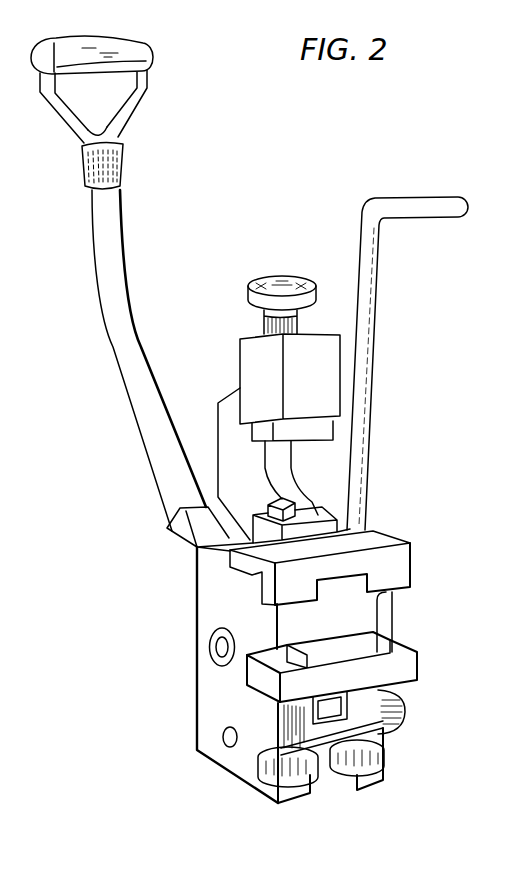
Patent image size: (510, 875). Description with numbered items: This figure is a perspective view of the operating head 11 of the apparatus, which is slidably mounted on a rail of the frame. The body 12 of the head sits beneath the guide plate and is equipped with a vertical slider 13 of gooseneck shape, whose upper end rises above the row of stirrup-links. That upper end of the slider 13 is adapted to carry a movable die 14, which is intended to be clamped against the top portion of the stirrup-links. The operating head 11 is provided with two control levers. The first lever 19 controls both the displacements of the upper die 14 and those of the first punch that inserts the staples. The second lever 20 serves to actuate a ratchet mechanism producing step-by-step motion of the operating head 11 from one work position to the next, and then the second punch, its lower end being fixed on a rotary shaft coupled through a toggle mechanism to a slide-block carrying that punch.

The operating head 11 is at (231, 361).
The body 12 is at (222, 614).
The vertical slider 13 is at (235, 450).
The movable die 14 is at (309, 431).
The first control lever 19 is at (118, 218).
The second control lever 20 is at (413, 206).